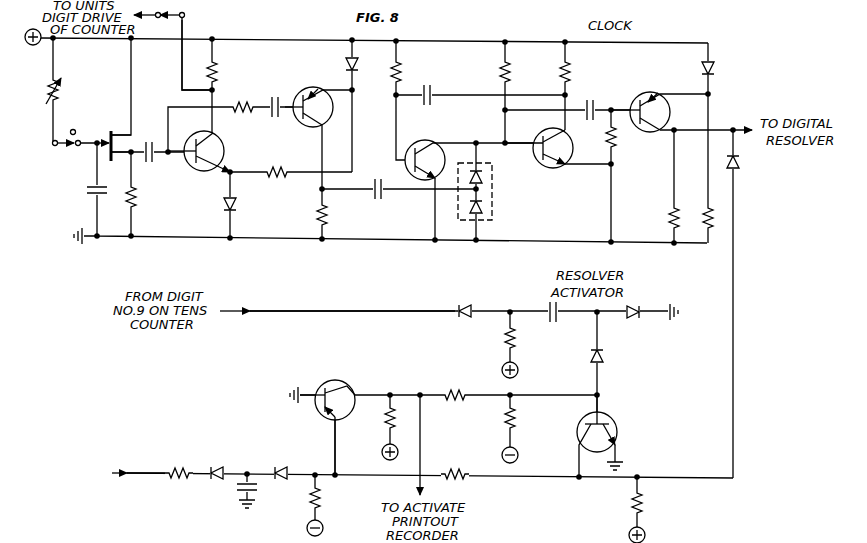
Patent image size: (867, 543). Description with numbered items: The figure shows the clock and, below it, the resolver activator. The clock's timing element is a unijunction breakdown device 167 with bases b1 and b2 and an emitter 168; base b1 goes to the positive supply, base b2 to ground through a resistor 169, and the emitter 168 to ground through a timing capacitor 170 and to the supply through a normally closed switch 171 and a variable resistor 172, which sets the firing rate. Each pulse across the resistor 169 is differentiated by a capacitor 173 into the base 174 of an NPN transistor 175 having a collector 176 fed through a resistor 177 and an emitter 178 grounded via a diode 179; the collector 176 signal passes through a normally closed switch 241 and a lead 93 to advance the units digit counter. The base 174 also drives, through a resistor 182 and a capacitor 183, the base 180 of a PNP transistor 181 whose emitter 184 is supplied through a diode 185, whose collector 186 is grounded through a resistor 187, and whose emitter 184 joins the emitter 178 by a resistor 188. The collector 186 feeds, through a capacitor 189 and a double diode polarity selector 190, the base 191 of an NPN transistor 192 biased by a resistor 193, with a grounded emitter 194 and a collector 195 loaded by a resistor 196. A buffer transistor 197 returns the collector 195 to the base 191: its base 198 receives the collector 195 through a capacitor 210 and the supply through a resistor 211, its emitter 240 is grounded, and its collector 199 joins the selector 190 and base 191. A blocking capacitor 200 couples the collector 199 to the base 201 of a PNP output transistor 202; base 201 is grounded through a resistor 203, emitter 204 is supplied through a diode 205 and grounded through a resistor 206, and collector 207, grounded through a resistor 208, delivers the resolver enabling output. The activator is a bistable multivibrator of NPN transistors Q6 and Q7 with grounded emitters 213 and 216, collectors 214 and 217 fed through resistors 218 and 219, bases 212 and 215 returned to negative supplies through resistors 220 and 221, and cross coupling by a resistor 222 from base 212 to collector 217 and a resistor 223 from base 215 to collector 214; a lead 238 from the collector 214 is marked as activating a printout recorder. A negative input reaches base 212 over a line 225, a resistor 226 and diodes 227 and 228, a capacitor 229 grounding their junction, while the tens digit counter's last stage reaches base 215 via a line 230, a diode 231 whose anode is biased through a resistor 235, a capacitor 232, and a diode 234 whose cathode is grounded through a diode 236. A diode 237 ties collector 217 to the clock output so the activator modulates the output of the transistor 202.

The lead 93 is at (153, 12).
The normally closed manually operable switch 241 is at (182, 12).
The variable resistor 172 is at (56, 92).
The manually operable switch 171 is at (68, 148).
The emitter 168 is at (90, 131).
The three-electrode voltage breakdown device 167 is at (112, 128).
The base b1 is at (123, 136).
The base b2 is at (122, 153).
The timing capacitor 170 is at (88, 191).
The capacitor 173 is at (149, 162).
The resistor 169 is at (137, 204).
The base 174 is at (190, 167).
The collector electrode 176 is at (201, 127).
The NPN-type transistor 175 is at (218, 143).
The emitter electrode 178 is at (216, 159).
The resistor 177 is at (217, 76).
The resistor 182 is at (252, 93).
The capacitor 183 is at (285, 94).
The diode 179 is at (237, 206).
The resistor 188 is at (275, 180).
The PNP-type transistor 181 is at (331, 121).
The base 180 is at (296, 123).
The emitter electrode 184 is at (325, 85).
The collector electrode 186 is at (315, 128).
The diode 185 is at (345, 66).
The resistor 187 is at (315, 215).
The capacitor 189 is at (375, 200).
The buffer transistor 197 is at (414, 150).
The collector 199 is at (428, 141).
The base electrode 198 is at (410, 171).
The emitter 240 is at (419, 209).
The resistor 211 is at (402, 70).
The capacitor 210 is at (431, 87).
The double diode polarity selector 190 is at (492, 204).
The resistor 193 is at (499, 72).
The resistor 196 is at (559, 72).
The base electrode 191 is at (541, 158).
The collector electrode 195 is at (542, 120).
The transistor 192 is at (566, 156).
The emitter electrode 194 is at (563, 170).
The blocking capacitor 200 is at (592, 93).
The resistor 203 is at (616, 143).
The output transistor 202 is at (670, 114).
The base electrode 201 is at (635, 101).
The emitter electrode 204 is at (652, 88).
The collector electrode 207 is at (657, 132).
The diode 205 is at (715, 68).
The resistor 208 is at (667, 217).
The resistor 206 is at (700, 210).
The diode 237 is at (741, 162).
The line 230 is at (298, 312).
The diode 231 is at (466, 320).
The resistor 235 is at (504, 340).
The capacitor 232 is at (553, 320).
The diode 236 is at (637, 320).
The diode 234 is at (606, 356).
The NPN transistor Q6 is at (342, 382).
The emitter electrode 213 is at (322, 385).
The collector electrode 214 is at (352, 386).
The base electrode 212 is at (324, 418).
The resistor 223 is at (461, 388).
The resistor 218 is at (384, 426).
The resistor 221 is at (504, 420).
The output conductor 238 is at (422, 441).
The resistor 222 is at (452, 470).
The NPN transistor Q7 is at (613, 425).
The base electrode 215 is at (585, 424).
The collector electrode 217 is at (582, 437).
The emitter electrode 216 is at (618, 440).
The resistor 219 is at (644, 503).
The line 225 is at (145, 471).
The resistor 226 is at (183, 458).
The diode 227 is at (221, 461).
The capacitor 229 is at (238, 489).
The diode 228 is at (283, 465).
The resistor 220 is at (321, 496).